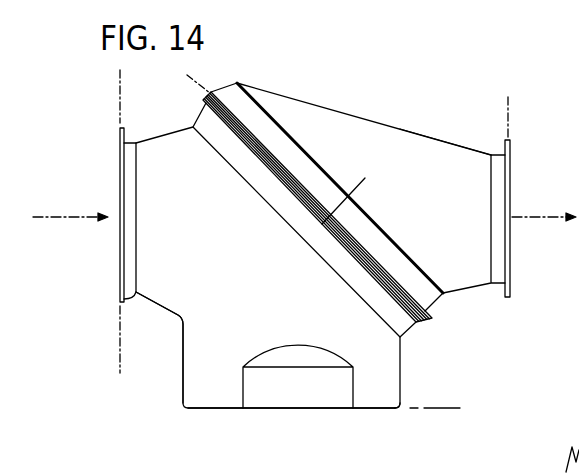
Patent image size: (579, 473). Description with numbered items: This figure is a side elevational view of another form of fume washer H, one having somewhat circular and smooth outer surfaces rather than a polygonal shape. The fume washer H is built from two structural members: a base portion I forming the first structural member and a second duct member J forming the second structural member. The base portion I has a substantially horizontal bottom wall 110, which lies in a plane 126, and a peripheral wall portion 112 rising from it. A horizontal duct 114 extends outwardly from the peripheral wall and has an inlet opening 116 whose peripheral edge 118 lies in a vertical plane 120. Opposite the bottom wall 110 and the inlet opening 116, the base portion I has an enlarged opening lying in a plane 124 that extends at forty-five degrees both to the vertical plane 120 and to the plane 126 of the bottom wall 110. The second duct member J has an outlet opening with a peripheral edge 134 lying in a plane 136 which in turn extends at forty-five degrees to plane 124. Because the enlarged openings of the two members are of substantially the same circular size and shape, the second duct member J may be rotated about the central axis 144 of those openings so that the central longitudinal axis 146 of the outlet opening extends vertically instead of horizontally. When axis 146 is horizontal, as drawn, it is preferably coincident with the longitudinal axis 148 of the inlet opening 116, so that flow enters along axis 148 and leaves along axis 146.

The bottom wall 110 is at (213, 410).
The peripheral wall portion 112 is at (212, 355).
The horizontal duct 114 is at (180, 149).
The inlet opening 116 is at (121, 174).
The peripheral edge 118 is at (120, 142).
The vertical plane 120 is at (121, 352).
The plane 124 is at (190, 80).
The plane 126 is at (440, 408).
The peripheral edge 134 is at (510, 150).
The plane 136 is at (509, 112).
The central axis 144 is at (352, 194).
The central longitudinal axis 146 is at (535, 219).
The longitudinal axis 148 is at (82, 219).
The fume washer H is at (306, 96).
The second duct member J is at (438, 138).
The base portion I is at (401, 409).